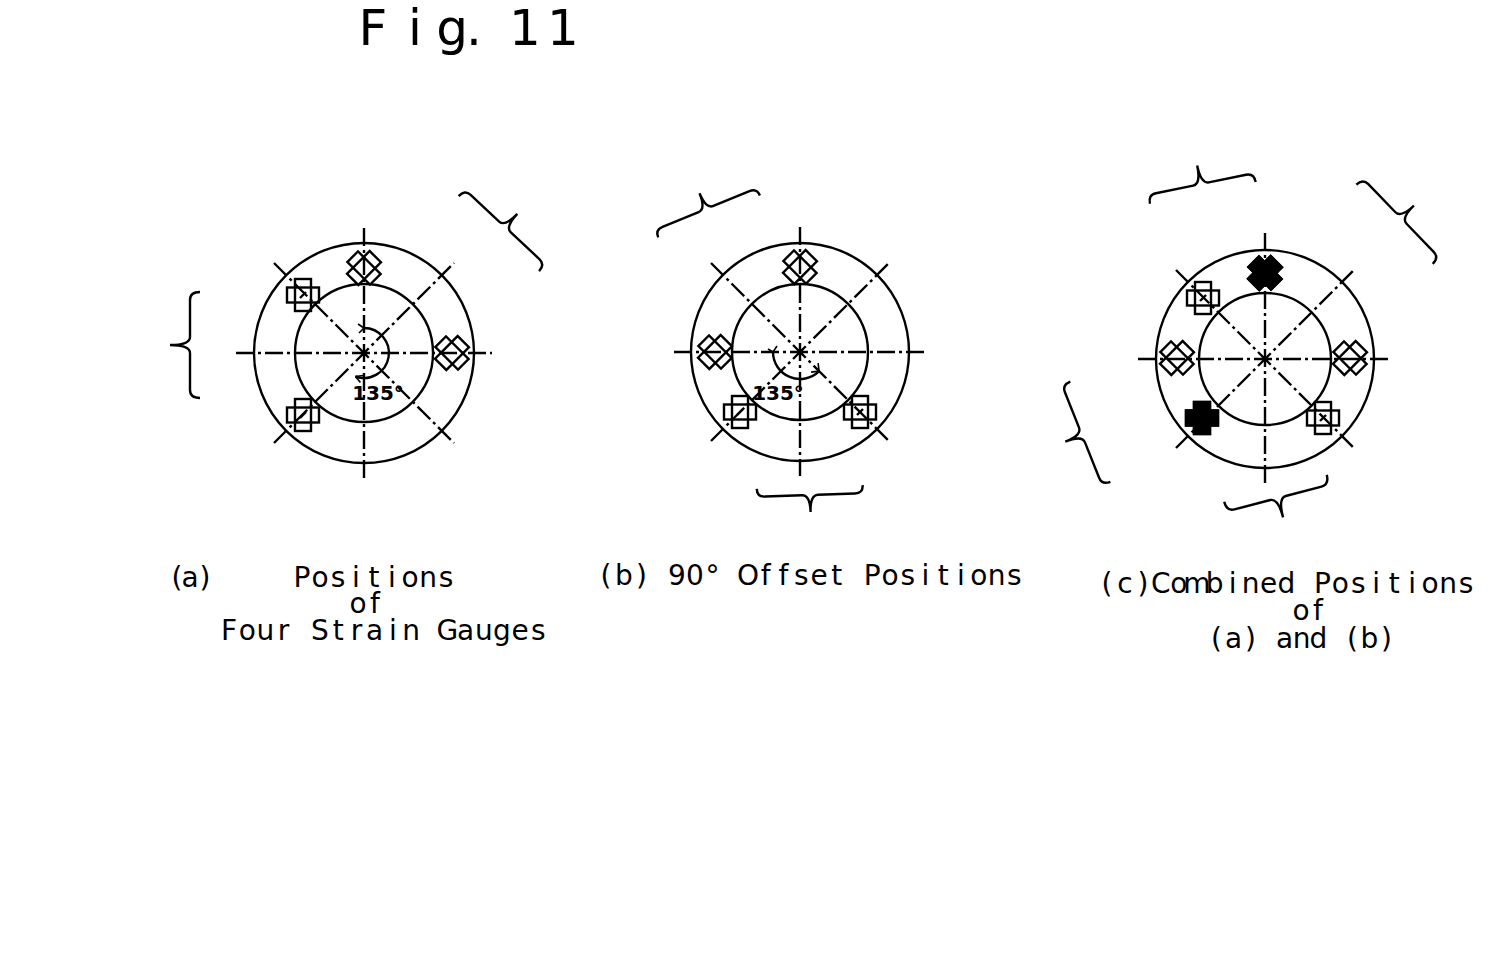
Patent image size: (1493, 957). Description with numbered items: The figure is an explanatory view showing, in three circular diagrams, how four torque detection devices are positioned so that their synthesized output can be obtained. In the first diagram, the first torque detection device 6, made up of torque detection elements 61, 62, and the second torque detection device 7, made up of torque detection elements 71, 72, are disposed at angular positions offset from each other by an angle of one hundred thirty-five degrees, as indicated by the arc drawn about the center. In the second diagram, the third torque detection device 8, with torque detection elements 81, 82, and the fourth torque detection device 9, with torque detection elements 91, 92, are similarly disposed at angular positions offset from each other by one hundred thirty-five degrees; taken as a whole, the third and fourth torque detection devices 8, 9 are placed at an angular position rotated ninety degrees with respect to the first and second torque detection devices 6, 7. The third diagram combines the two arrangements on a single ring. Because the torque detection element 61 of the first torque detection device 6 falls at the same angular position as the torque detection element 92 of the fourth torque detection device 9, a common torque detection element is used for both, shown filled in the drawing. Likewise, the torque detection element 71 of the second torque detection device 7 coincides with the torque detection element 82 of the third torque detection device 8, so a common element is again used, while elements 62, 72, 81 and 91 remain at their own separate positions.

The first torque detection device 6 is at (956, 218).
The torque detection element 61 is at (380, 250).
The torque detection element 62 is at (453, 337).
The second torque detection device 7 is at (629, 392).
The torque detection element 71 is at (280, 413).
The torque detection element 72 is at (280, 293).
The third torque detection device 8 is at (1046, 513).
The torque detection element 81 is at (853, 425).
The torque detection element 82 is at (752, 425).
The fourth torque detection device 9 is at (952, 183).
The torque detection element 91 is at (717, 337).
The torque detection element 92 is at (783, 260).